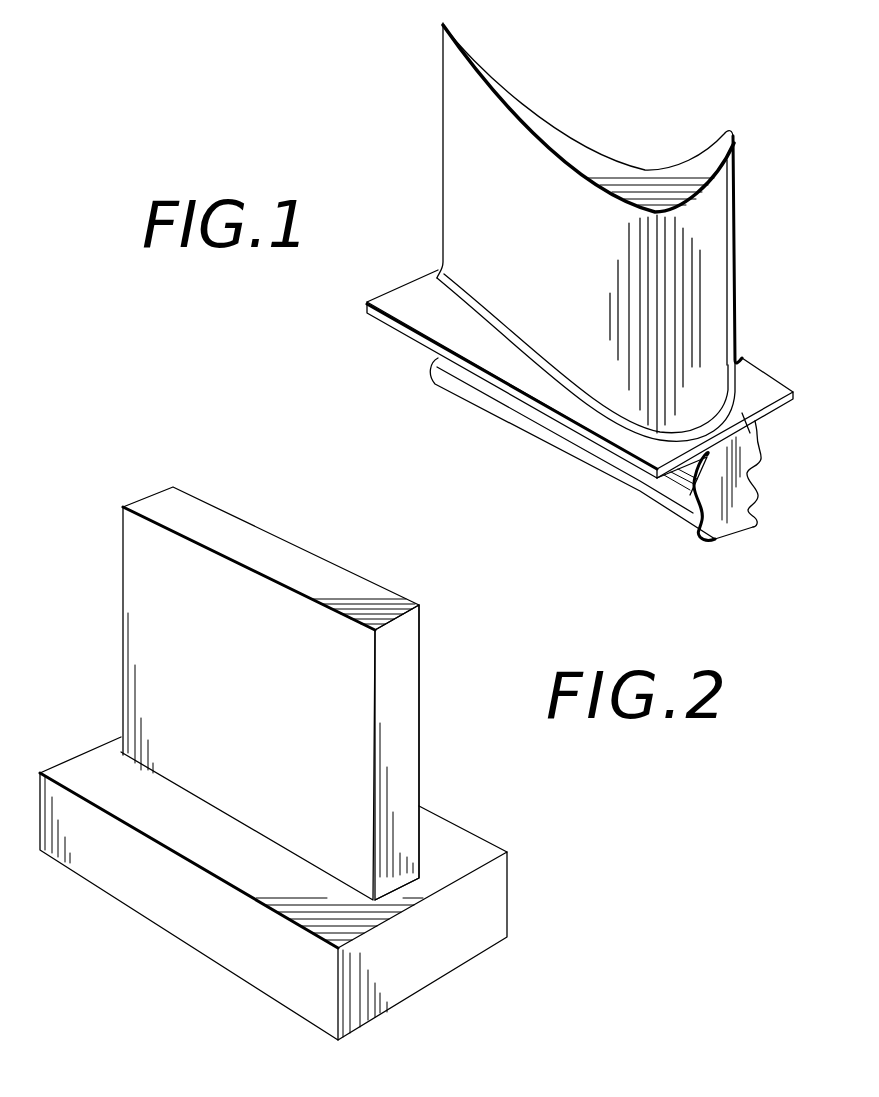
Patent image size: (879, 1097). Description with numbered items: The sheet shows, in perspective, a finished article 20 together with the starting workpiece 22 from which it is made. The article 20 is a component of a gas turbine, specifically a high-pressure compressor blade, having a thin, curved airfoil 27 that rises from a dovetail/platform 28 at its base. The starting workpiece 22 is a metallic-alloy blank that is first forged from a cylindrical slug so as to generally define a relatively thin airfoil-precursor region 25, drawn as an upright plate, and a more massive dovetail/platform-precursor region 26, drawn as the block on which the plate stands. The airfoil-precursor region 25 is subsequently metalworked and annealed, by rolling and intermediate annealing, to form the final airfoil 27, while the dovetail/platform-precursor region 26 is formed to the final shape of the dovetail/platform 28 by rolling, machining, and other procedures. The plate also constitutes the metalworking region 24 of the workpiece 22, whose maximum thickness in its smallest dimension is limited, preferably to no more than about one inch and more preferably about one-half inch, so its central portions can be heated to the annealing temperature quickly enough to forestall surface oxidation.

In FIG. 1, the article 20 is at (442, 171).
In FIG. 1, the airfoil 27 is at (707, 265).
In FIG. 1, the dovetail/platform 28 is at (747, 473).
In FIG. 2, the starting workpiece 22 is at (91, 578).
In FIG. 2, the metalworking region 24 is at (347, 637).
In FIG. 2, the airfoil-precursor region 25 is at (400, 767).
In FIG. 2, the dovetail/platform-precursor region 26 is at (485, 912).